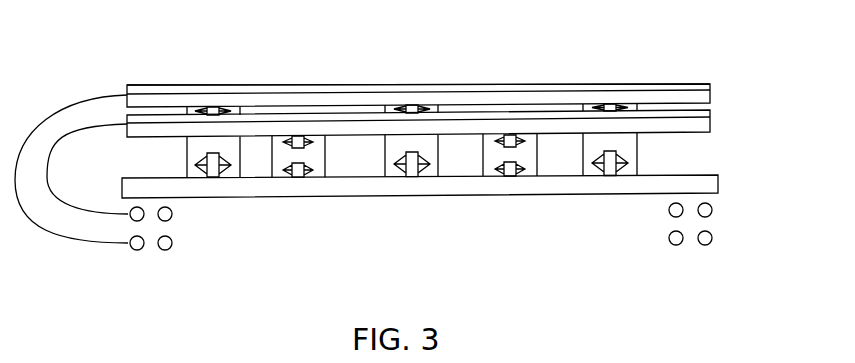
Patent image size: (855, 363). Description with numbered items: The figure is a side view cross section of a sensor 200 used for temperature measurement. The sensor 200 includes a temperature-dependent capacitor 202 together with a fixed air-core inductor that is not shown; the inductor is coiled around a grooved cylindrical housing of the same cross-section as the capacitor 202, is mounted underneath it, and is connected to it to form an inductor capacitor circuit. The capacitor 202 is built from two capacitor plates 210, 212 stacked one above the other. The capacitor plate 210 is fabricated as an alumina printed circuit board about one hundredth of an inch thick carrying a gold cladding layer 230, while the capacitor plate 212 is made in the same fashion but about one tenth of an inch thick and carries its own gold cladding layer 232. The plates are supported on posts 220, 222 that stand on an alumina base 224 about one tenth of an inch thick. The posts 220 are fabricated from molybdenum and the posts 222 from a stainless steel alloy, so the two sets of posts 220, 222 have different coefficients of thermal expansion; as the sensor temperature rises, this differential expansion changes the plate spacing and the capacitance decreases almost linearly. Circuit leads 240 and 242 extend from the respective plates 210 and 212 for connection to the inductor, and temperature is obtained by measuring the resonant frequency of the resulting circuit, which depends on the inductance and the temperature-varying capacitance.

The sensor 200 is at (407, 164).
The temperature-dependent capacitor 202 is at (463, 84).
The capacitor plate 210 is at (713, 96).
The capacitor plate 212 is at (713, 127).
The posts 220 is at (325, 154).
The posts 222 is at (240, 154).
The alumina base 224 is at (207, 198).
The gold cladding layer 230 is at (695, 84).
The gold cladding layer 232 is at (713, 107).
The circuit lead 240 is at (71, 141).
The circuit lead 242 is at (48, 167).